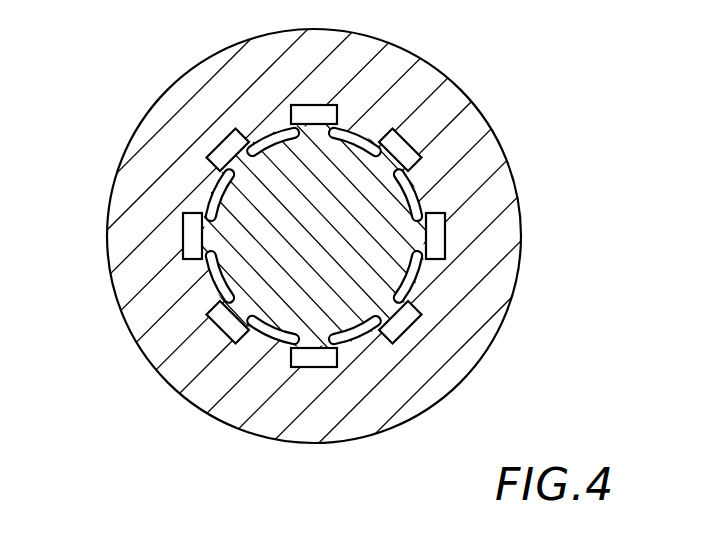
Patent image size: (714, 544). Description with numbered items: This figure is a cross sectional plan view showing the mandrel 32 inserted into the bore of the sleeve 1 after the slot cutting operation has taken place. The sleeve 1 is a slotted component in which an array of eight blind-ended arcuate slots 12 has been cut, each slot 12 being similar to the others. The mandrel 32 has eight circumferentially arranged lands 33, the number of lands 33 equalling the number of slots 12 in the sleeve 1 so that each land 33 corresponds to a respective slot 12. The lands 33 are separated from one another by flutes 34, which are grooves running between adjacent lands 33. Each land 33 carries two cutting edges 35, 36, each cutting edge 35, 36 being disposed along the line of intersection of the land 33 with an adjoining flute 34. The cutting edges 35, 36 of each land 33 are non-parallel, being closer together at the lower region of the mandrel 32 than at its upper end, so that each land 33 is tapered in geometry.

The sleeve 1 is at (490, 146).
The slot 12 is at (448, 251).
The mandrel 32 is at (230, 197).
The land 33 is at (450, 227).
The flute 34 is at (262, 340).
The cutting edge 35 is at (265, 356).
The cutting edge 36 is at (364, 333).